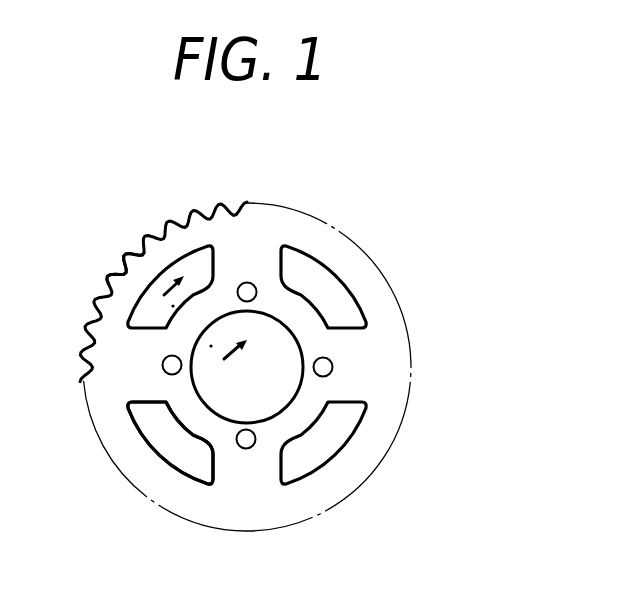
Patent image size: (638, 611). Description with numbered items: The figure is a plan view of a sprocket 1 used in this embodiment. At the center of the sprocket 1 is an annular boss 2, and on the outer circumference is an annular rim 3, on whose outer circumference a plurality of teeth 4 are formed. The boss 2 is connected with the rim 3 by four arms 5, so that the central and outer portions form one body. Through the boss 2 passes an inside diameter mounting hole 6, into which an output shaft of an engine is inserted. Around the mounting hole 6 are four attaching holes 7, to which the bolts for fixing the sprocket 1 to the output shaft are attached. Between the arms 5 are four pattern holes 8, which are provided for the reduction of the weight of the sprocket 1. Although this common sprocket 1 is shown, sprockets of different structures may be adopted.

The sprocket 1 is at (392, 217).
The annular boss 2 is at (300, 323).
The annular rim 3 is at (180, 242).
The teeth 4 is at (128, 253).
The arms 5 is at (150, 390).
The inside diameter mounting hole 6 is at (256, 390).
The attaching holes 7 is at (334, 370).
The pattern holes 8 is at (158, 452).